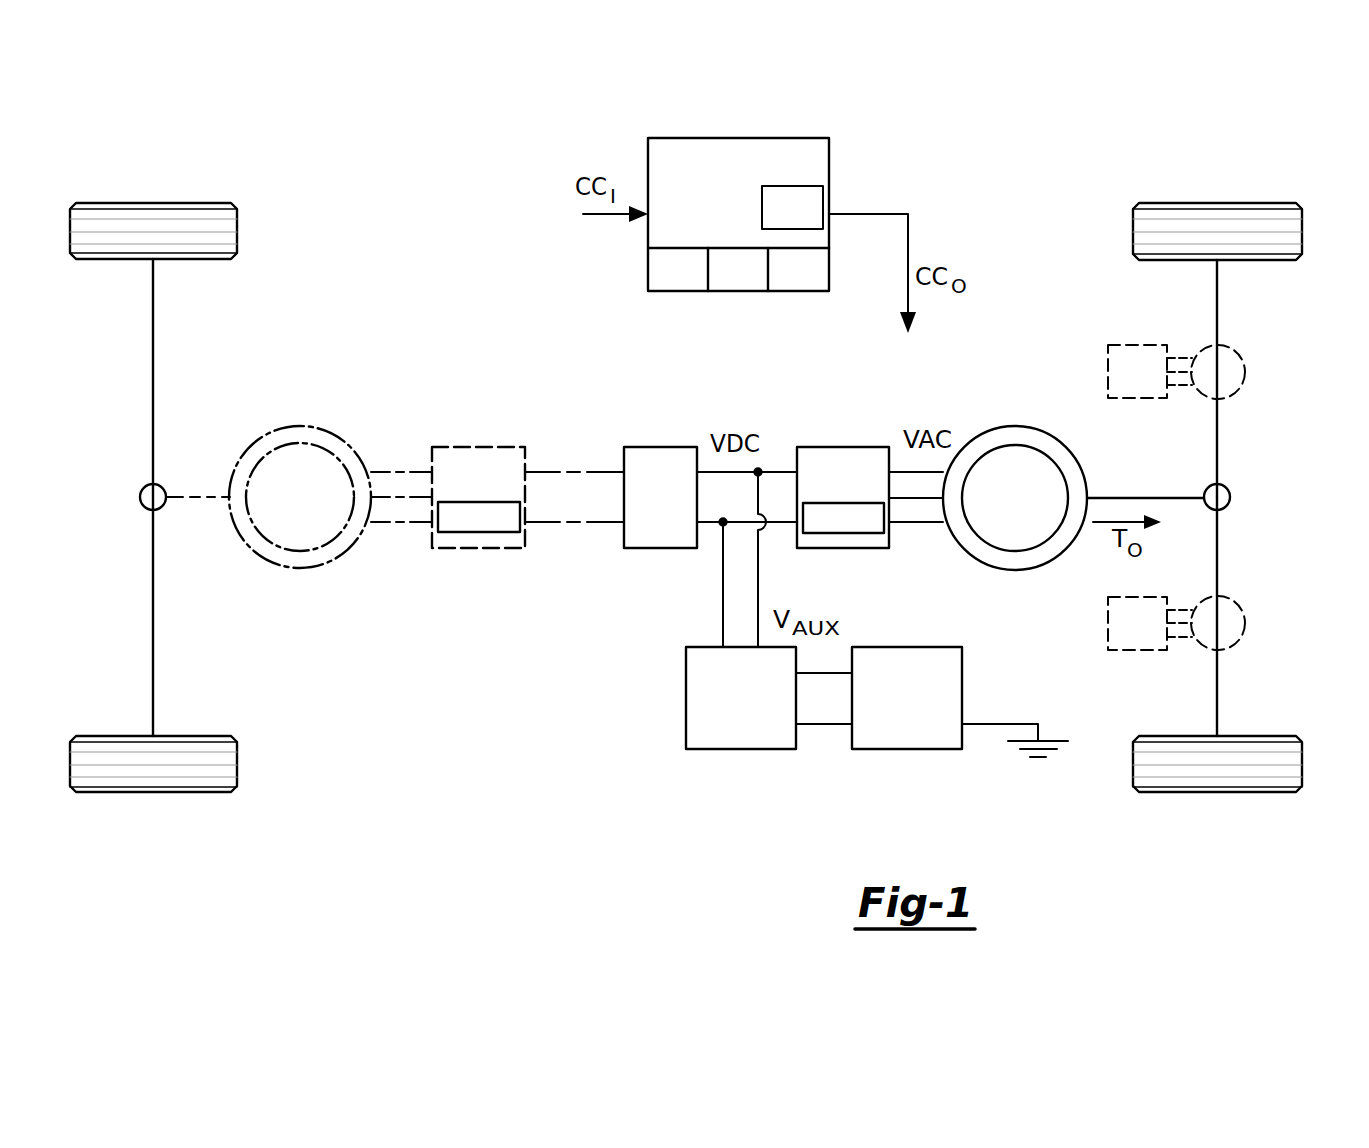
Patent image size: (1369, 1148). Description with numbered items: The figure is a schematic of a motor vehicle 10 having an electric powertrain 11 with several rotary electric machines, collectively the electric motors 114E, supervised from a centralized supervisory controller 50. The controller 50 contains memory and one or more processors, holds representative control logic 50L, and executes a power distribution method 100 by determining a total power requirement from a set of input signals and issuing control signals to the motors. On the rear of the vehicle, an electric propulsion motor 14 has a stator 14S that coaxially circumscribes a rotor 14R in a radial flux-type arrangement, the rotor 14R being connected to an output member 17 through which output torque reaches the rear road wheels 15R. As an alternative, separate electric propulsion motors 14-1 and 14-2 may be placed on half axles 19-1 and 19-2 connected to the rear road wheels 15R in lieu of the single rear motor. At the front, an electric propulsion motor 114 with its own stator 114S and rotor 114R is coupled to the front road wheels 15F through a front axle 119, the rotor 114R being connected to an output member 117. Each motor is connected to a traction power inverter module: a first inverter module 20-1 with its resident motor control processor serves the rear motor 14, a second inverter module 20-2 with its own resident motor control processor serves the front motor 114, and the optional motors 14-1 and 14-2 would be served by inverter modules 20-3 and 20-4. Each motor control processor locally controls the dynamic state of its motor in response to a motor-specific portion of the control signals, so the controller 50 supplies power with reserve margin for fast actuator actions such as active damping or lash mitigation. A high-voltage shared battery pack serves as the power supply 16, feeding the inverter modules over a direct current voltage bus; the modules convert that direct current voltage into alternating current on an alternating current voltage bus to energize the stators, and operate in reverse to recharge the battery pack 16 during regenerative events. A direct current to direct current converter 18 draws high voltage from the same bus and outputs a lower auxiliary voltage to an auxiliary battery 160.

The motor vehicle 10 is at (1088, 122).
The electric powertrain 11 is at (972, 360).
The electric propulsion motor 14 is at (995, 502).
The stator 14S is at (1012, 437).
The rotor 14R is at (1015, 551).
The electric propulsion motor 14-1 is at (1245, 372).
The electric propulsion motor 14-2 is at (1245, 623).
The front road wheels 15F is at (152, 203).
The rear road wheels 15R is at (1217, 203).
The power supply 16 is at (660, 447).
The output member 17 is at (1148, 498).
The DC-DC converter 18 is at (740, 749).
The half axle 19-1 is at (1217, 318).
The half axle 19-2 is at (1217, 682).
The traction power inverter module 20-1 is at (845, 447).
The traction power inverter module 20-2 is at (482, 447).
The traction power inverter module 20-3 is at (1138, 352).
The traction power inverter module 20-4 is at (1140, 645).
The supervisory controller 50 is at (738, 181).
The control logic 50L is at (792, 207).
The method 100 is at (683, 269).
The electric propulsion motor 114 is at (564, 505).
The stator 114S is at (345, 443).
The rotor 114R is at (300, 550).
The electric motors 114E is at (382, 593).
The output member 117 is at (186, 497).
The front axle 119 is at (153, 350).
The auxiliary battery 160 is at (907, 749).